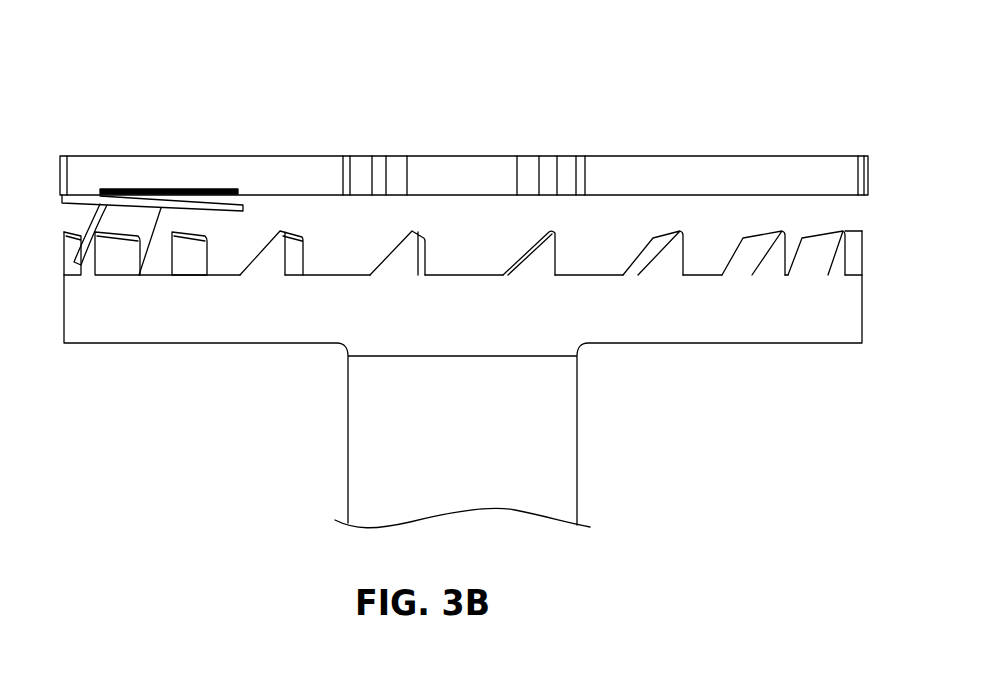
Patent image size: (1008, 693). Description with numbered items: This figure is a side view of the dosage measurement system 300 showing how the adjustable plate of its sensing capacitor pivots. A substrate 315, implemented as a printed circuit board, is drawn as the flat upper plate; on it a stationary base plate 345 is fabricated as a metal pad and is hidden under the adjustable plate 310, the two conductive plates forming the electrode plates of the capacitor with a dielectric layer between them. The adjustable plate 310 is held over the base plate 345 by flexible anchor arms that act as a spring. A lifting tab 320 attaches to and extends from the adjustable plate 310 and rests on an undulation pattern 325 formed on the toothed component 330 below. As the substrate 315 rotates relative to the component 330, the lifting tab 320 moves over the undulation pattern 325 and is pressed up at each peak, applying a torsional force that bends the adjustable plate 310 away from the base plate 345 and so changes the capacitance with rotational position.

The dosage measurement system 300 is at (737, 110).
The adjustable plate 310 is at (197, 203).
The substrate 315 is at (308, 189).
The lifting tab 320 is at (131, 228).
The undulation pattern 325 is at (573, 247).
The component 330 is at (468, 318).
The base plate 345 is at (147, 189).